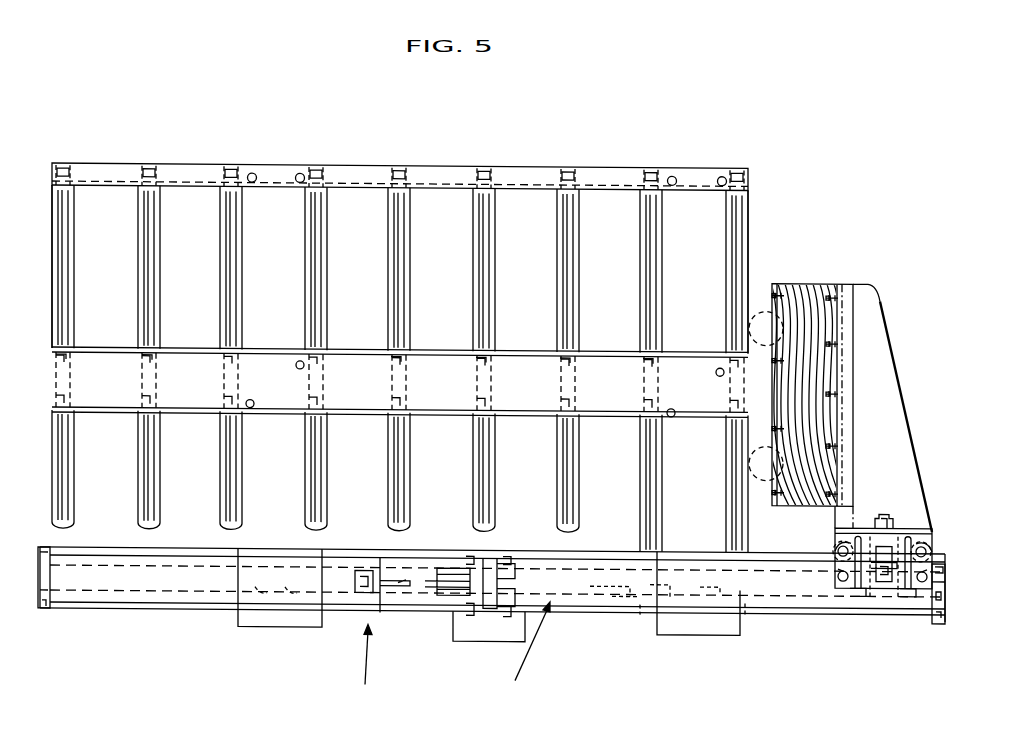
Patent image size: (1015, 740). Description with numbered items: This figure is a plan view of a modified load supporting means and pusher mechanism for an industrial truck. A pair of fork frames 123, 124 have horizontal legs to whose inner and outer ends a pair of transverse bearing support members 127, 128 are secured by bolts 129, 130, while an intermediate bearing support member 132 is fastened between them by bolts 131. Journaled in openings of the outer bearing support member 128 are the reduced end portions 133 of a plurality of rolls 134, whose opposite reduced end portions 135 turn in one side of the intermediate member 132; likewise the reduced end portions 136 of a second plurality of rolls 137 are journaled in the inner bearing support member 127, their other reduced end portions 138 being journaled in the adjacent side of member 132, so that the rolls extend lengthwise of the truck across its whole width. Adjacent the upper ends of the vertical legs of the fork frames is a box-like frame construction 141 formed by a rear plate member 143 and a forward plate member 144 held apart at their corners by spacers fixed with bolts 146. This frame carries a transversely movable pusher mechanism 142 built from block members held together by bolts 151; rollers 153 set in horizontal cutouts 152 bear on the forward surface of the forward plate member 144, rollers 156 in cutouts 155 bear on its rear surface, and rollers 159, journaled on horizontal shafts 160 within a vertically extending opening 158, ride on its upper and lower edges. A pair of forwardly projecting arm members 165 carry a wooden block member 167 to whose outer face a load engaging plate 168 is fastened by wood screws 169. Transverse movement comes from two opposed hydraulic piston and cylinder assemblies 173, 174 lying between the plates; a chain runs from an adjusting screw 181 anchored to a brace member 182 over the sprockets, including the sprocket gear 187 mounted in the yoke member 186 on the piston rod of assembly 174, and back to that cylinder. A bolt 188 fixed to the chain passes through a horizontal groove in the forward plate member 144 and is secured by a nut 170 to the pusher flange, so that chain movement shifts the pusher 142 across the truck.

The fork frame 123 is at (705, 235).
The fork frame 124 is at (278, 195).
The bearing support member 127 is at (616, 608).
The bearing support member 128 is at (525, 175).
The bolts 129 is at (292, 605).
The bolts 130 is at (252, 170).
The bolts 131 is at (298, 360).
The intermediate bearing support member 132 is at (441, 370).
The reduced end portions 133 is at (150, 166).
The rolls 134 is at (143, 262).
The reduced end portions 135 is at (140, 357).
The reduced end portions 136 is at (640, 612).
The rolls 137 is at (143, 462).
The reduced end portions 138 is at (146, 402).
The box-like frame construction 141 is at (363, 663).
The pusher mechanism 142 is at (913, 368).
The plate member 143 is at (572, 612).
The forward plate member 144 is at (583, 555).
The bolts 146 is at (43, 547).
The bolts 151 is at (856, 592).
The cutouts 152 is at (840, 540).
The rollers 153 is at (836, 544).
The cutouts 155 is at (945, 583).
The rollers 156 is at (836, 571).
The vertically extending opening 158 is at (888, 600).
The rollers 159 is at (878, 595).
The horizontal shafts 160 is at (880, 600).
The arm members 165 is at (897, 442).
The block member 167 is at (820, 290).
The load engaging plate 168 is at (779, 286).
The wood screws 169 is at (763, 395).
The nut 170 is at (897, 518).
The hydraulic piston and cylinder assembly 173 is at (177, 578).
The hydraulic piston and cylinder assembly 174 is at (523, 649).
The adjusting screw 181 is at (398, 585).
The brace member 182 is at (380, 600).
The yoke member 186 is at (455, 565).
The sprocket gear 187 is at (437, 572).
The bolt 188 is at (883, 508).